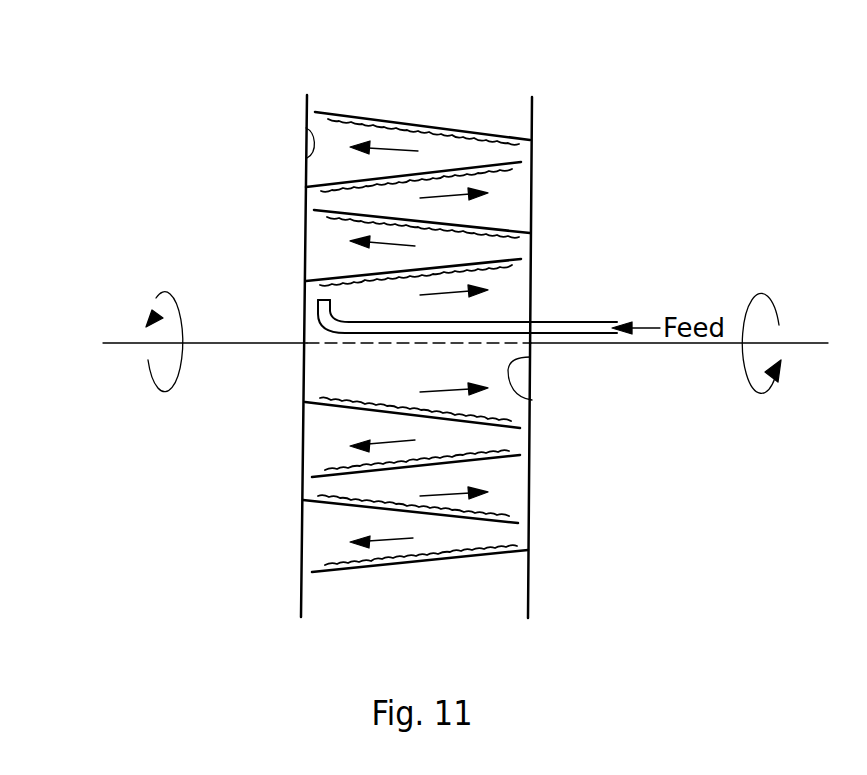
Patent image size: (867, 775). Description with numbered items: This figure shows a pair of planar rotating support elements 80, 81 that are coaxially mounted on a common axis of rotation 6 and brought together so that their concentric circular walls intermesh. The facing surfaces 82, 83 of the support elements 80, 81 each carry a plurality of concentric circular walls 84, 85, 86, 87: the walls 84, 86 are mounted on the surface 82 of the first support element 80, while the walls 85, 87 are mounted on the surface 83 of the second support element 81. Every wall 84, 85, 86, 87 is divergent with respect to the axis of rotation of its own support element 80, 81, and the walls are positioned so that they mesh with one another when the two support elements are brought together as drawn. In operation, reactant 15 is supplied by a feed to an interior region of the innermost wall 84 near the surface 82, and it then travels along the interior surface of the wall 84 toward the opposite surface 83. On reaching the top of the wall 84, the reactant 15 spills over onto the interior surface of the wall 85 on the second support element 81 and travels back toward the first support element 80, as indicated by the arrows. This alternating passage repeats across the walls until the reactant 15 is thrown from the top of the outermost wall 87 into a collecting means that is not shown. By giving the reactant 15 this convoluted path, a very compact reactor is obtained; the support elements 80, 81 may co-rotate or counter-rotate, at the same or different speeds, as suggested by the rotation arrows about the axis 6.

The axis of rotation 6 is at (117, 343).
The reactant 15 is at (370, 277).
The support element 80 is at (306, 204).
The support element 81 is at (532, 187).
The facing surface 82 is at (306, 128).
The facing surface 83 is at (532, 400).
The concentric circular wall 84 is at (337, 279).
The concentric circular wall 85 is at (508, 232).
The concentric circular wall 86 is at (306, 177).
The outermost wall 87 is at (507, 136).